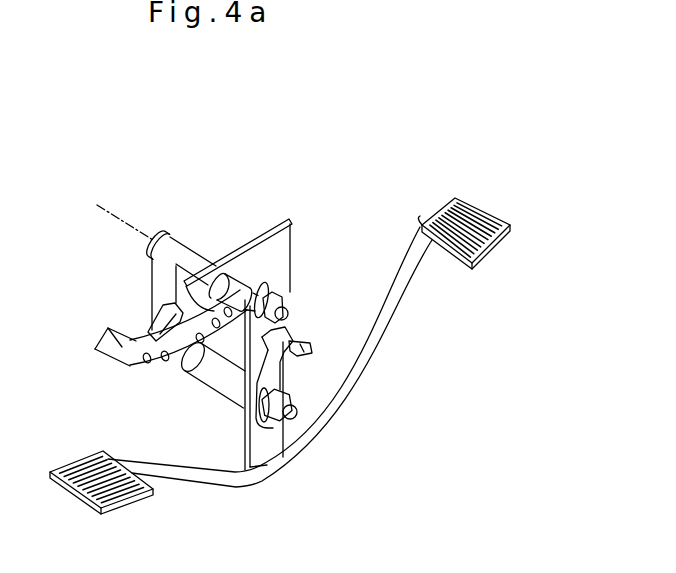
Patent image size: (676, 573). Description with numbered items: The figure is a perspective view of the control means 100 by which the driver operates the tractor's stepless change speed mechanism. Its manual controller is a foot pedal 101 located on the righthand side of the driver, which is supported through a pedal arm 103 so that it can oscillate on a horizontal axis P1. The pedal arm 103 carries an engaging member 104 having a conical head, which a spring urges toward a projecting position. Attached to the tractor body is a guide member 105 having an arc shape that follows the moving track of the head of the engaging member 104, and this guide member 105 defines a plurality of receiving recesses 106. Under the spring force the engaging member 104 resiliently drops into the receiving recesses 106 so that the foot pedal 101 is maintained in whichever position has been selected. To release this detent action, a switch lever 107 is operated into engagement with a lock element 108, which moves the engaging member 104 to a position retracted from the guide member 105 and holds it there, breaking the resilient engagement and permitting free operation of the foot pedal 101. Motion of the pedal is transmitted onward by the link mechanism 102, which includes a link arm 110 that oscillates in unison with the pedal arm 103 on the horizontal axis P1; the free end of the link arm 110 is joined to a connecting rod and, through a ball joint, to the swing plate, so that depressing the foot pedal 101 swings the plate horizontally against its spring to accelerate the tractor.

The control means 100 is at (266, 310).
The foot pedal 101 is at (296, 333).
The link mechanism 102 is at (124, 300).
The pedal arm 103 is at (313, 430).
The engaging member 104 is at (211, 384).
The guide member 105 is at (82, 362).
The receiving recesses 106 is at (172, 378).
The switch lever 107 is at (285, 349).
The lock element 108 is at (359, 354).
The link arm 110 is at (181, 238).
The horizontal axis P1 is at (125, 191).